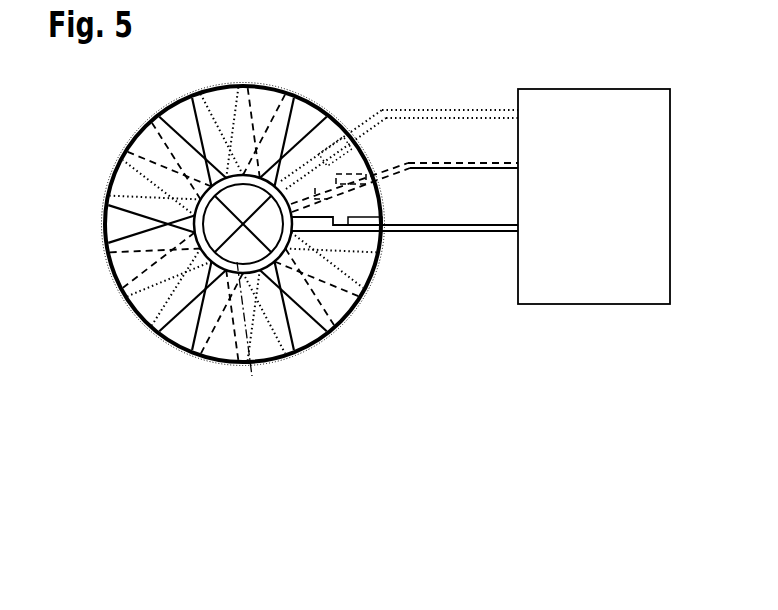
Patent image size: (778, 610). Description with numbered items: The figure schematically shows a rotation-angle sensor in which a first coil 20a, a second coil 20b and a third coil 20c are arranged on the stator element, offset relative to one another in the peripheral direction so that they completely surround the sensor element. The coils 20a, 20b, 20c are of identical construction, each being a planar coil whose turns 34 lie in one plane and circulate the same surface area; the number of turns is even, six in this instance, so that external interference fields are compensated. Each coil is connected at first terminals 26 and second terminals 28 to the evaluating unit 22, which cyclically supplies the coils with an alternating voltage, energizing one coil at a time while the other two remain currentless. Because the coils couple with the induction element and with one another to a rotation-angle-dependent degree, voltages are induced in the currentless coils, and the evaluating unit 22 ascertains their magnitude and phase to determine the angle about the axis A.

The first coil 20a is at (110, 246).
The second coil 20b is at (133, 290).
The third coil 20c is at (167, 326).
The evaluating unit 22 is at (585, 294).
The first terminals 26 is at (382, 108).
The second terminals 28 is at (388, 118).
The turns 34 is at (329, 324).
The axis A is at (252, 376).